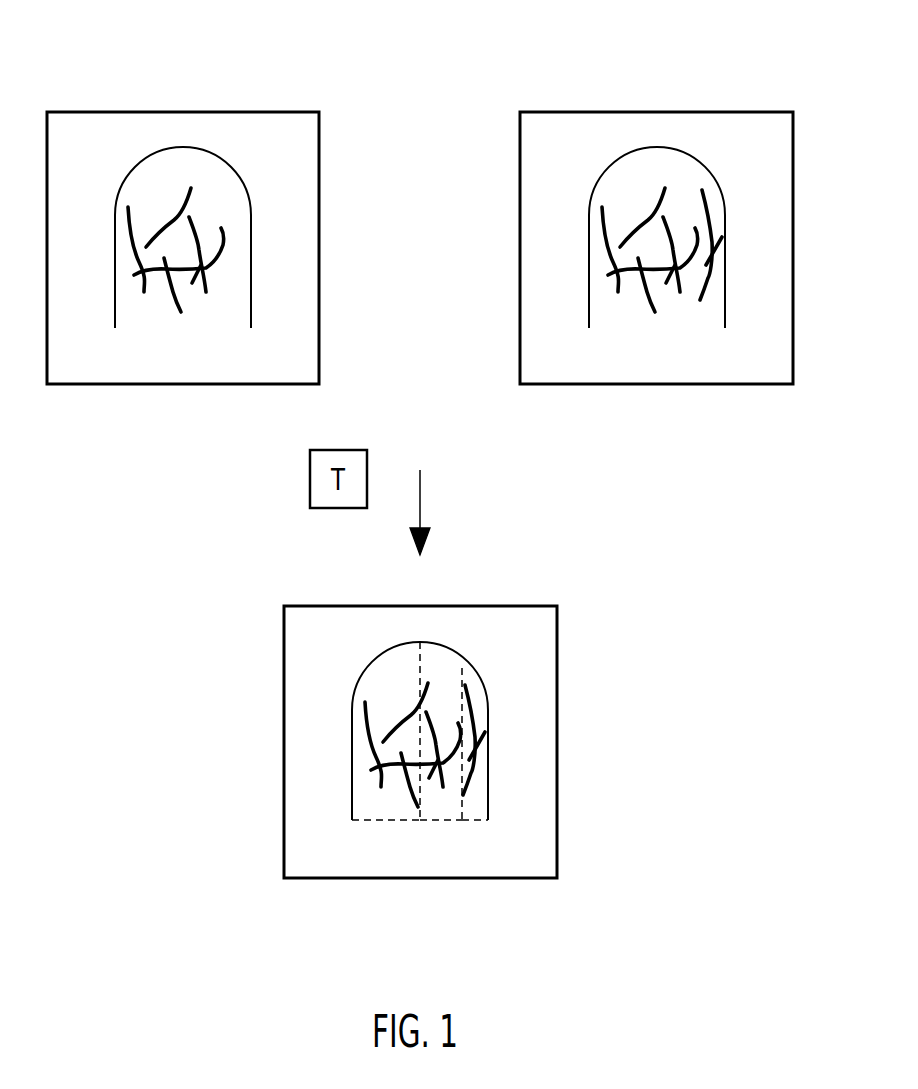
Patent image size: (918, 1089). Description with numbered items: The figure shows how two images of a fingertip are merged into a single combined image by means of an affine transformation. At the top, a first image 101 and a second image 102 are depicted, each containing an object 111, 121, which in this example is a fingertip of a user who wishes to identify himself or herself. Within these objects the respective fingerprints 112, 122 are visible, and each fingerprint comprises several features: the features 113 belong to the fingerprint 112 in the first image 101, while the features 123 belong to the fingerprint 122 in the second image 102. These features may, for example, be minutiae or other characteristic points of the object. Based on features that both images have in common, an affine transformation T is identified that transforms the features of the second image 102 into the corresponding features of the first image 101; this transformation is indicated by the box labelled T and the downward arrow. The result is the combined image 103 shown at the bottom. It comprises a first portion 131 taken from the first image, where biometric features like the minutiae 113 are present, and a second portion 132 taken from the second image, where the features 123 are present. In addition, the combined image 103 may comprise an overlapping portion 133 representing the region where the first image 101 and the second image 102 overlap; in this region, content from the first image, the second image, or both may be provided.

The first image 101 is at (211, 226).
The second image 102 is at (685, 226).
The combined image 103 is at (368, 735).
The object 111 is at (216, 290).
The fingerprint 112 is at (140, 311).
The features 113 is at (128, 242).
The object 121 is at (720, 290).
The fingerprint 122 is at (726, 311).
The features 123 is at (703, 290).
The first portion 131 is at (438, 823).
The second portion 132 is at (472, 823).
The overlapping portion 133 is at (442, 658).